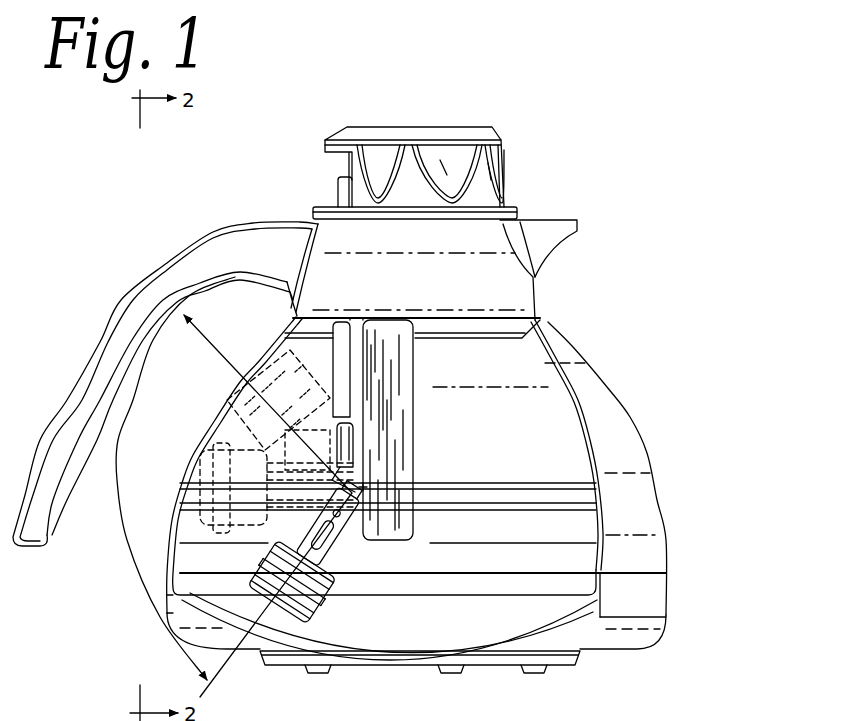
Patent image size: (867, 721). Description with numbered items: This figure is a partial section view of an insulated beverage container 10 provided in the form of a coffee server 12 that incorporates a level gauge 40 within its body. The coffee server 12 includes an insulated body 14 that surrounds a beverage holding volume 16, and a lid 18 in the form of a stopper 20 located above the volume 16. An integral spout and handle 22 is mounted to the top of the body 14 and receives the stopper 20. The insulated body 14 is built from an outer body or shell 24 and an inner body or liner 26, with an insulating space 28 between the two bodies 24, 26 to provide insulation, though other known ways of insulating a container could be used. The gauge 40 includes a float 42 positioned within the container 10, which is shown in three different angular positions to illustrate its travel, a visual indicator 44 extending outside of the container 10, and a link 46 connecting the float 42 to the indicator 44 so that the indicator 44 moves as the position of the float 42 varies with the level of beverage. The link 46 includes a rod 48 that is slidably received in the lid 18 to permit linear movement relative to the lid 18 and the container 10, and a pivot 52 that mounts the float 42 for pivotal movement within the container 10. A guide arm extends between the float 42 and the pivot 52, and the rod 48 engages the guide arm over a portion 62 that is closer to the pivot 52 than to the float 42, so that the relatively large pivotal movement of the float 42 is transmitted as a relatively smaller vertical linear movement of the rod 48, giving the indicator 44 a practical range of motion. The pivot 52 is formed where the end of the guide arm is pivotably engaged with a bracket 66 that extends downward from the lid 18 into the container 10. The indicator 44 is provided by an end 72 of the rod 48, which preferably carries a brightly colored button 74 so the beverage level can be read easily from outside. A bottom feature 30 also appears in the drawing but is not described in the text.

The insulated beverage container 10 is at (622, 199).
The coffee server 12 is at (558, 283).
The insulated body 14 is at (592, 384).
The beverage holding volume 16 is at (524, 362).
The lid 18 is at (515, 137).
The stopper 20 is at (514, 203).
The integral spout and handle 22 is at (286, 217).
The outer body or shell 24 is at (572, 447).
The inner body or liner 26 is at (583, 447).
The insulating space 28 is at (604, 522).
The bottom plate 30 is at (420, 686).
The gauge 40 is at (418, 396).
The float 42 is at (188, 450).
The visual indicator 44 is at (333, 182).
The link 46 is at (355, 554).
The rod 48 is at (420, 688).
The pivot 52 is at (363, 487).
The portion of the guide arm 62 is at (363, 487).
The bracket 66 is at (412, 374).
The end of the rod 72 is at (350, 193).
The button 74 is at (426, 693).